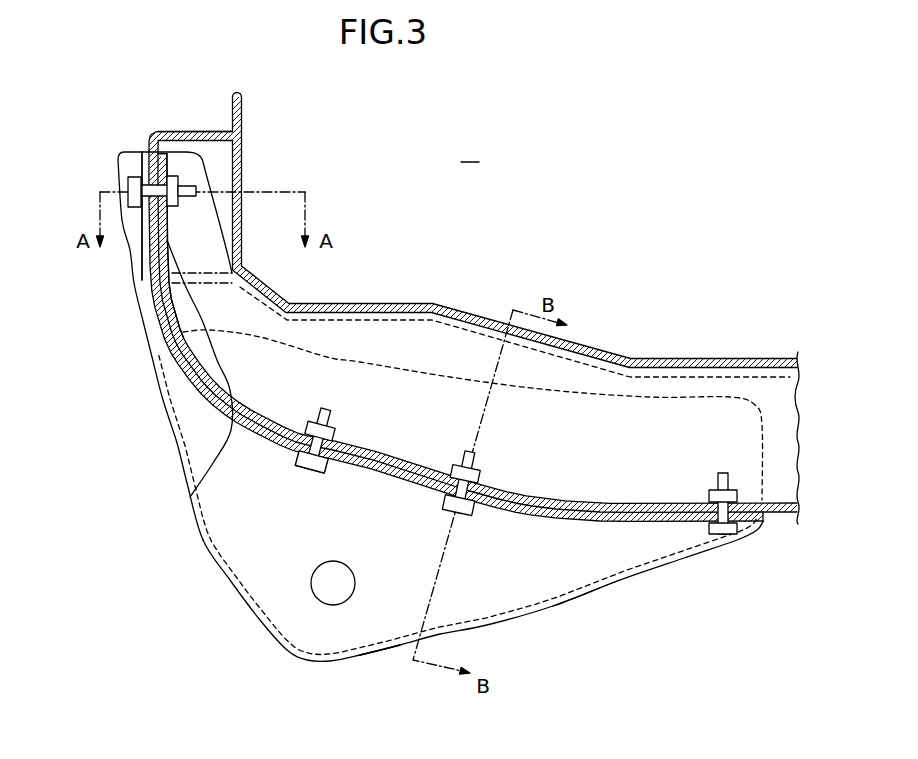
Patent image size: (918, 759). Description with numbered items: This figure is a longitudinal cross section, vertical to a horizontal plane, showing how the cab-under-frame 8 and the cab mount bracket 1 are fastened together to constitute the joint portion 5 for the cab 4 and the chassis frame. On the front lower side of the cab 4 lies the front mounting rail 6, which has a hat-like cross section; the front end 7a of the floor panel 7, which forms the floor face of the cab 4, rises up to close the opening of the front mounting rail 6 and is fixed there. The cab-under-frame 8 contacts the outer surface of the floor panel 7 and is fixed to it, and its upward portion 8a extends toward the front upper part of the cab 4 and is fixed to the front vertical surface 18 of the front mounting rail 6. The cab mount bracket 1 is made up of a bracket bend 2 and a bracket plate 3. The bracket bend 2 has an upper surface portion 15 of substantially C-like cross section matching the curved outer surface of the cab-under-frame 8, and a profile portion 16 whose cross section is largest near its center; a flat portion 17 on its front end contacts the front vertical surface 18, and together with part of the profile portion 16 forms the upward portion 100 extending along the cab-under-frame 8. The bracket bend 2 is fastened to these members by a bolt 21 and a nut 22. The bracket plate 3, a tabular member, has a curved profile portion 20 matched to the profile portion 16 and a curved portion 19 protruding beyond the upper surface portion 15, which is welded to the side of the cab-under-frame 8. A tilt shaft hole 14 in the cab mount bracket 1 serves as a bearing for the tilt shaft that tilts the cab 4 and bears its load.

The cab mount bracket 1 is at (529, 636).
The bracket bend 2 is at (152, 347).
The bracket plate 3 is at (673, 548).
The cab 4 is at (470, 149).
The joint portion 5 is at (381, 661).
The front mounting rail 6 is at (203, 131).
The floor panel 7 is at (590, 347).
The front end 7a is at (243, 163).
The cab-under-frame 8 is at (635, 503).
The upward portion 8a is at (191, 497).
The tilt shaft hole 14 is at (326, 583).
The upper surface portion 15 is at (680, 503).
The profile portion 16 is at (580, 604).
The flat portion 17 is at (150, 177).
The front vertical surface 18 is at (150, 262).
The curved portion 19 is at (642, 395).
The curved profile portion 20 is at (627, 577).
The bolt 21 is at (135, 178).
The nut 22 is at (178, 197).
The upward portion 100 is at (123, 264).